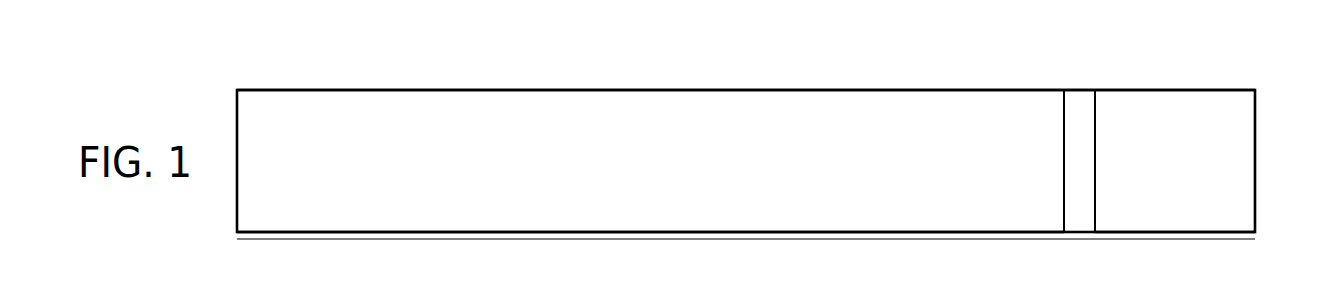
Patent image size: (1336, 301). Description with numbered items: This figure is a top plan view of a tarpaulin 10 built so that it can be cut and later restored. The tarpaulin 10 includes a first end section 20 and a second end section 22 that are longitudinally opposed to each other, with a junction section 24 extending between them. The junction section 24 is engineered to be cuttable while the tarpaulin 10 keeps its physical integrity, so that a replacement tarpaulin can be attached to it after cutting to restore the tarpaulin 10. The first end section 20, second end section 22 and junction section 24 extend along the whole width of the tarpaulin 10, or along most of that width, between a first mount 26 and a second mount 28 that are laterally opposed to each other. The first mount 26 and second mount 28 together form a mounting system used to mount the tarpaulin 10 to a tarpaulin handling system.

The tarpaulin 10 is at (776, 156).
The first end section 20 is at (238, 246).
The second end section 22 is at (1095, 246).
The junction section 24 is at (1095, 85).
The first mount 26 is at (412, 90).
The second mount 28 is at (1256, 238).